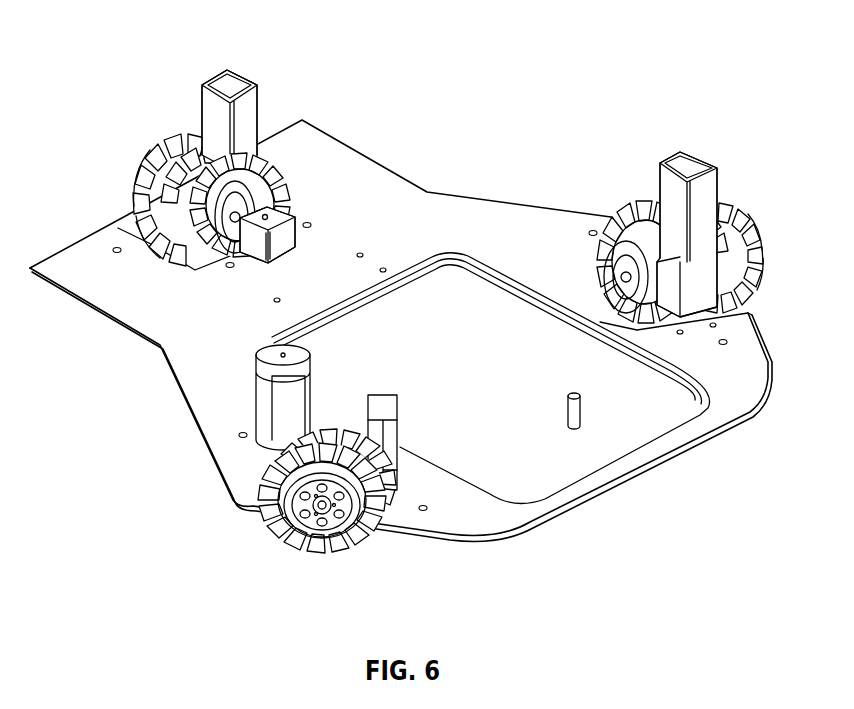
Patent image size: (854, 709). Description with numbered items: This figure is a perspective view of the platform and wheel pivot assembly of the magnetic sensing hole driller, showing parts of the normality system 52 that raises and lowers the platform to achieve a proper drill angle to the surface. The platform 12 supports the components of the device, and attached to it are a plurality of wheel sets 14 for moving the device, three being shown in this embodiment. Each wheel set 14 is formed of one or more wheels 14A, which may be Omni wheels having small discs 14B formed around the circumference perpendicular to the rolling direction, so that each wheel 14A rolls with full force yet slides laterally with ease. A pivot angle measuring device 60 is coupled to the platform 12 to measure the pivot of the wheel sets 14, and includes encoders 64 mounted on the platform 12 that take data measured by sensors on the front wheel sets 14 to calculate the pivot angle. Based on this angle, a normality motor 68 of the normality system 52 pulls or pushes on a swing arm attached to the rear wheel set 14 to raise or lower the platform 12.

The platform 12 is at (73, 253).
The normality system 52 is at (399, 132).
The normality motor 68 is at (300, 237).
The pivot angle measuring device 60 is at (377, 381).
The encoder 64 is at (387, 400).
The wheel set 14 is at (296, 562).
The wheel 14A is at (333, 540).
The disc 14B is at (277, 540).